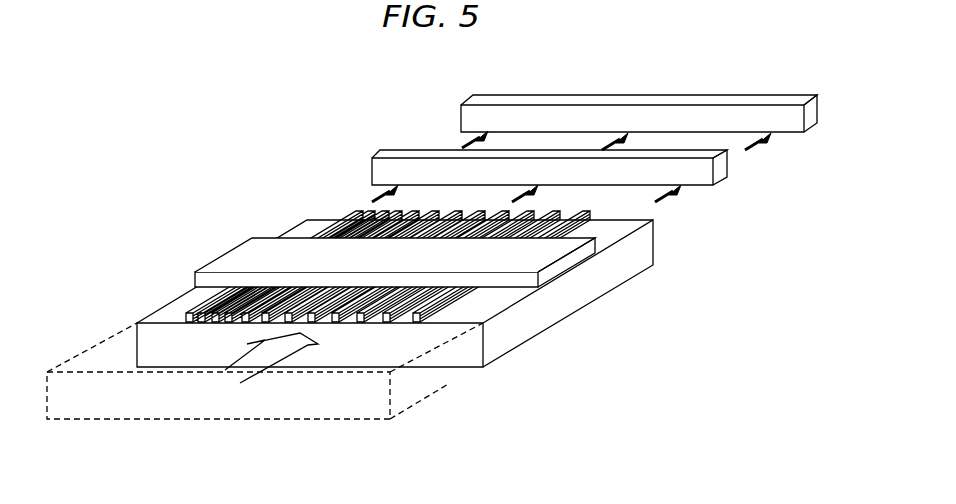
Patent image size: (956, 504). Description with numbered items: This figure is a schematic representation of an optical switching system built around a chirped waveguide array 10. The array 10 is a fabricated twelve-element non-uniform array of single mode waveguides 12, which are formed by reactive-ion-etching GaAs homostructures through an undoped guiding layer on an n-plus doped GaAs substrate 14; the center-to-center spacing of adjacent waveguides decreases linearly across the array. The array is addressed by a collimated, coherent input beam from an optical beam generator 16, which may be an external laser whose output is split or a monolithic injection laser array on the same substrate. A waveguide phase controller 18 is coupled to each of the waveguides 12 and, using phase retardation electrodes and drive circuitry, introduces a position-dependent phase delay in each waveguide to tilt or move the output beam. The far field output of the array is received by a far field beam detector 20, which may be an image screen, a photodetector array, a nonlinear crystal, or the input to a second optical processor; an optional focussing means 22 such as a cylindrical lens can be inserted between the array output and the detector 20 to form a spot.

The non-uniform waveguide array 10 is at (173, 286).
The single mode waveguides 12 is at (354, 216).
The substrate 14 is at (530, 321).
The optical beam generator 16 is at (430, 383).
The waveguide phase controller 18 is at (578, 255).
The far field beam detector 20 is at (461, 116).
The optional focussing means 22 is at (372, 171).